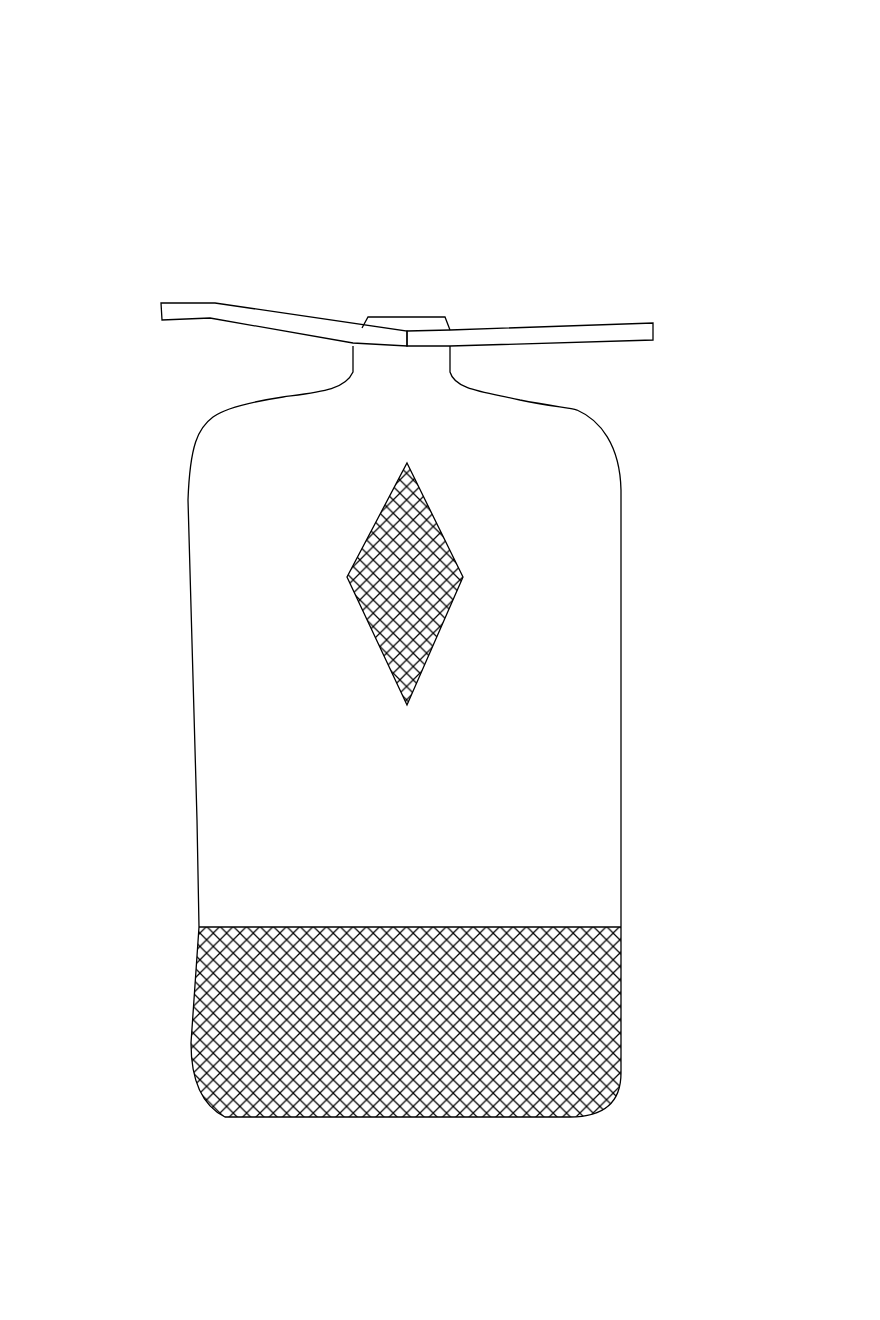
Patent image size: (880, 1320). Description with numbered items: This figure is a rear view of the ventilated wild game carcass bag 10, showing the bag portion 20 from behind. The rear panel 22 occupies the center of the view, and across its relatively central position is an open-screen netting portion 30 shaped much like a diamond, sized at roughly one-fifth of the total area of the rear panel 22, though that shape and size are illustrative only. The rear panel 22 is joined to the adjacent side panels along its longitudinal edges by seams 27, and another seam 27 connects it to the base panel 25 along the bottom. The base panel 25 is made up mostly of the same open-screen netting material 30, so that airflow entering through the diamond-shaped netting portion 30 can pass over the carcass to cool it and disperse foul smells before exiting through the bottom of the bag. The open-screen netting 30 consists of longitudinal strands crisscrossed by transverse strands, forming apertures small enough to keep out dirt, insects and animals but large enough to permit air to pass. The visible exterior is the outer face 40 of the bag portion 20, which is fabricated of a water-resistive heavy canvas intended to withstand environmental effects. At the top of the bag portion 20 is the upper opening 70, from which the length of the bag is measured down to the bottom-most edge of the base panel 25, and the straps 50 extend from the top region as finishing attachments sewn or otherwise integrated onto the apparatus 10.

The ventilated wild game carcass bag 10 is at (628, 172).
The bag portion 20 is at (632, 702).
The rear panel 22 is at (597, 795).
The base panel 25 is at (323, 1115).
The seam 27 is at (192, 560).
The open-screen netting portion 30 is at (385, 627).
The outer face 40 is at (203, 693).
The straps 50 is at (242, 307).
The upper opening 70 is at (417, 318).